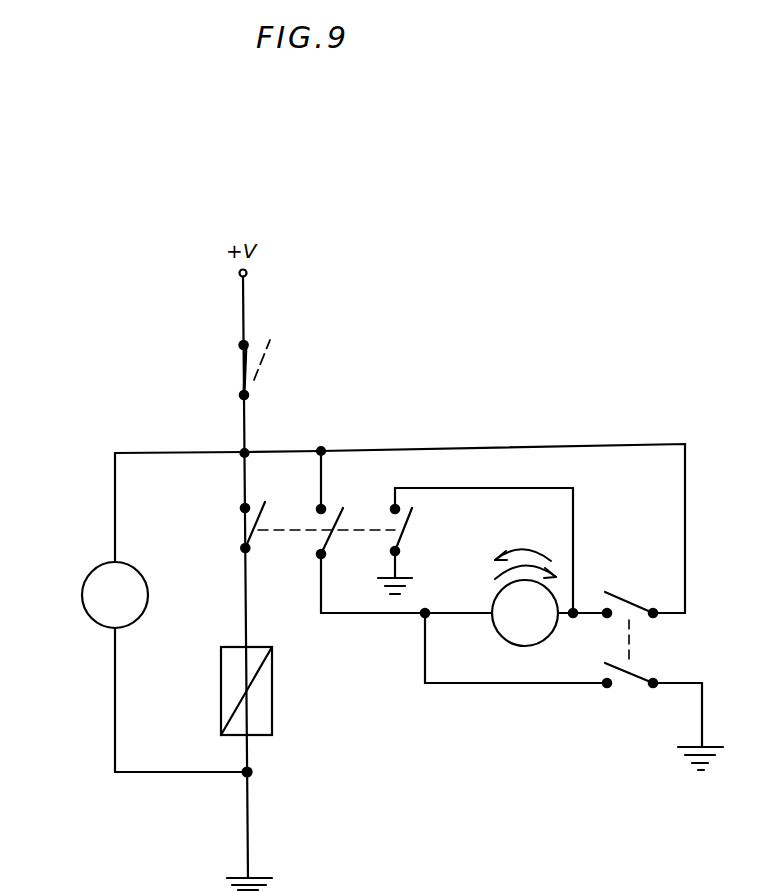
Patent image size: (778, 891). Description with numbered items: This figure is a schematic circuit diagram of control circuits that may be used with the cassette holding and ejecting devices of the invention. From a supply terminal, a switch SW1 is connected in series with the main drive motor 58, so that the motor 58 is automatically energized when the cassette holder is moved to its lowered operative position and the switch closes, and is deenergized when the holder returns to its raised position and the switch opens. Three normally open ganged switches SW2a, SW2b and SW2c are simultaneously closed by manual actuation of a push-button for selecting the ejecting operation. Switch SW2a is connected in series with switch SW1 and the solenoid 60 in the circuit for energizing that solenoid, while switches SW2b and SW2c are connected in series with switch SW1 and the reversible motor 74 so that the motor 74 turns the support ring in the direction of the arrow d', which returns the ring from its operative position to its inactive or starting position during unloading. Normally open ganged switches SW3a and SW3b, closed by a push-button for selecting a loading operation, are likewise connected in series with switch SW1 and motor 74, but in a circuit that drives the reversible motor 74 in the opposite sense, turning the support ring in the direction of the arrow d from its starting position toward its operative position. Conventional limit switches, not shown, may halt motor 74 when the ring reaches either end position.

The main drive motor 58 is at (82, 590).
The solenoid 60 is at (221, 684).
The reversible motor 74 is at (537, 646).
The switch SW1 is at (242, 373).
The ganged switch SW2a is at (244, 532).
The ganged switch SW2b is at (337, 514).
The ganged switch SW2c is at (412, 521).
The ganged switch SW3a is at (614, 596).
The ganged switch SW3b is at (638, 675).
The arrow d is at (523, 543).
The arrow d' is at (496, 582).